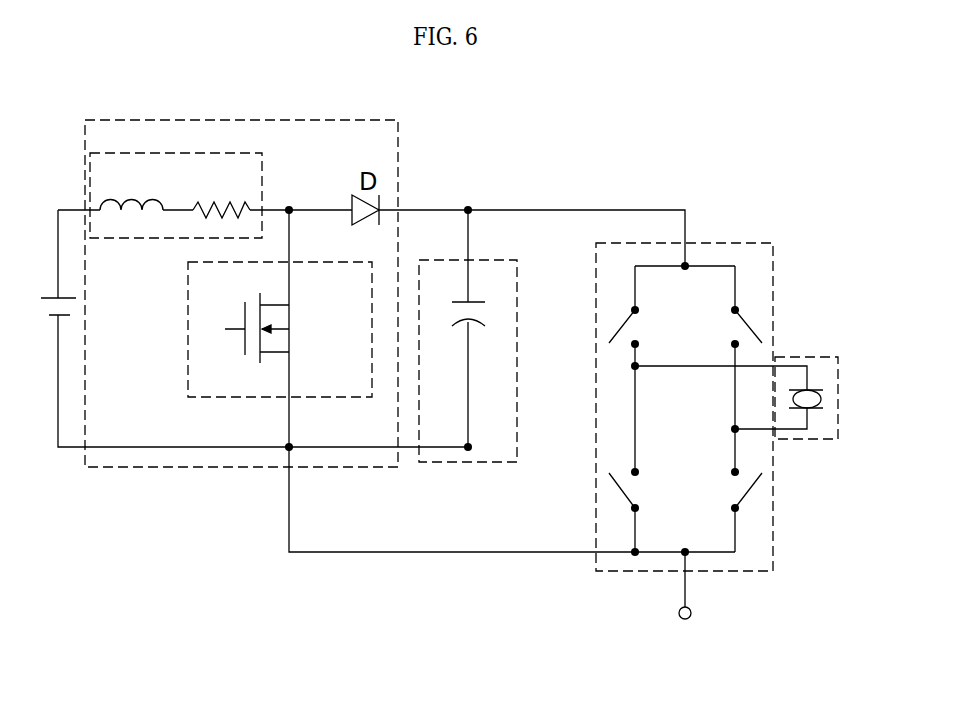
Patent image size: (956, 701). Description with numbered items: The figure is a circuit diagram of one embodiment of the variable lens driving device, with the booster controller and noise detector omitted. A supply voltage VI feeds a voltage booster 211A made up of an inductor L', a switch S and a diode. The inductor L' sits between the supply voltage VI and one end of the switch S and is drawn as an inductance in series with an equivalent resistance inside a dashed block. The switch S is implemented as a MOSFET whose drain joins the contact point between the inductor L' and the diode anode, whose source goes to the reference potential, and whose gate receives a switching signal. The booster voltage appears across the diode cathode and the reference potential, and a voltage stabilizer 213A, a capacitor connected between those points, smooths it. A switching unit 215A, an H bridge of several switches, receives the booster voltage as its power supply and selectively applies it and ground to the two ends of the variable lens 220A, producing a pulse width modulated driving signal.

The voltage booster 211A is at (348, 122).
The voltage stabilizer 213A is at (497, 258).
The switching unit 215A is at (742, 242).
The variable lens 220A is at (807, 357).
The inductor L' is at (184, 180).
The switch S is at (188, 343).
The supply voltage VI is at (46, 308).